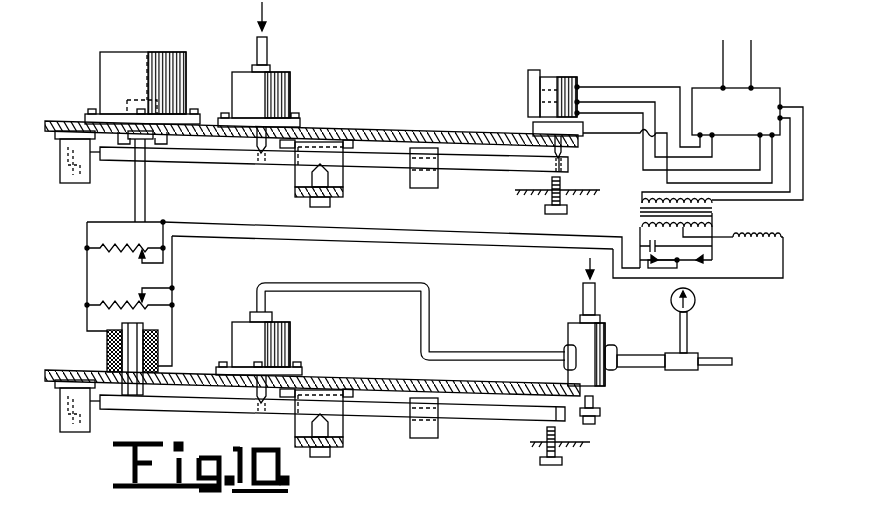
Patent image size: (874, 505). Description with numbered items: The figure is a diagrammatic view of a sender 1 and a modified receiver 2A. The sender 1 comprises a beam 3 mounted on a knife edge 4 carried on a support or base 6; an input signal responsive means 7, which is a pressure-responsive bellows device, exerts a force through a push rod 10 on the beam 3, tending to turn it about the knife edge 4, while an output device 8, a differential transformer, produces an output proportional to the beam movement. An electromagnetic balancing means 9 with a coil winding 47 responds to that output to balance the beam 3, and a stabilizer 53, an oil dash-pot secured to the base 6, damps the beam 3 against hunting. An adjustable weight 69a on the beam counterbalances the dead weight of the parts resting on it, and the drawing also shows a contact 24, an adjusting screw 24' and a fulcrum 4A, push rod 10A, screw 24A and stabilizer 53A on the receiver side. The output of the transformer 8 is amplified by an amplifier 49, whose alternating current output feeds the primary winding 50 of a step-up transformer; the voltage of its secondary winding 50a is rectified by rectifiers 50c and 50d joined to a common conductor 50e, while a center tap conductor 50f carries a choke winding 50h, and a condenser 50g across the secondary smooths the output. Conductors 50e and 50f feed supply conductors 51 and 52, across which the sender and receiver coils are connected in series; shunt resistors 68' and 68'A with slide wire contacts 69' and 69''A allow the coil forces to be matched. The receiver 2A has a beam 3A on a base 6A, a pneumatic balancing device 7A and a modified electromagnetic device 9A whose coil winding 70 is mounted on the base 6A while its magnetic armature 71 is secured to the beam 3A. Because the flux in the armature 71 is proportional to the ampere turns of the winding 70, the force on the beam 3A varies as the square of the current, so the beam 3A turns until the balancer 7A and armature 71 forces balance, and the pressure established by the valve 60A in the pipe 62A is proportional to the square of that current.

The device 1 is at (392, 97).
The beam 3 is at (492, 165).
The knife edge 4 is at (310, 177).
The support or base 6 is at (470, 135).
The input signal responsive means 7 is at (314, 97).
The output device 8 is at (512, 101).
The electromagnetic balancing means 9 is at (88, 87).
The push rod 10 is at (255, 143).
The contact 24 is at (585, 154).
The adjusting screw 24' is at (566, 189).
The coil winding 47 is at (132, 84).
The amplifier 49 is at (768, 95).
The primary winding 50 is at (640, 197).
The secondary winding 50a is at (712, 214).
The rectifier 50c is at (654, 265).
The rectifier 50d is at (700, 263).
The common conductor 50e is at (678, 266).
The conductor 50f is at (717, 240).
The condenser 50g is at (648, 241).
The choke winding 50h is at (782, 236).
The supply conductor 51 is at (516, 231).
The supply conductor 52 is at (529, 250).
The stabilizer 53 is at (58, 203).
The shunt resistor 68' is at (125, 276).
The potentiometer 68'A is at (92, 296).
The slide wire contact 69' is at (185, 301).
The adjustable weight 69''A is at (329, 363).
The adjustable weight 69a is at (412, 174).
The coil winding 70 is at (160, 340).
The armature 71 is at (137, 360).
The receiver 2A is at (378, 355).
The beam 3A is at (402, 427).
The bracket 4A is at (343, 428).
The base 6A is at (423, 388).
The pneumatic balancing device 7A is at (318, 346).
The electromagnetic device 9A is at (82, 361).
The pin 10A is at (256, 394).
The adjusting screw 24A is at (565, 460).
The bracket 53A is at (60, 458).
The valve 60A is at (572, 333).
The pipe 62A is at (672, 356).